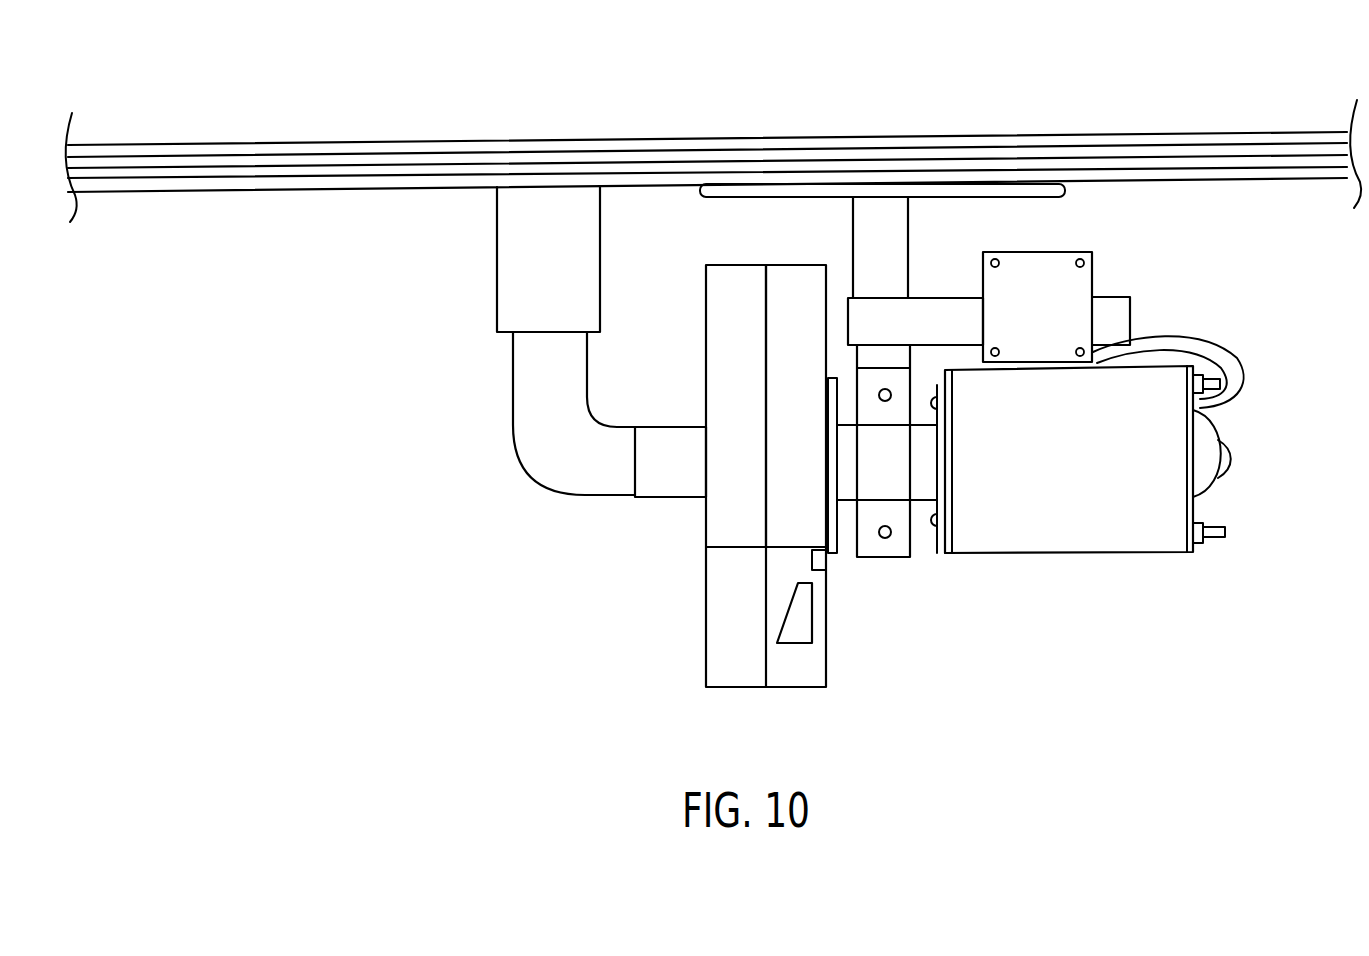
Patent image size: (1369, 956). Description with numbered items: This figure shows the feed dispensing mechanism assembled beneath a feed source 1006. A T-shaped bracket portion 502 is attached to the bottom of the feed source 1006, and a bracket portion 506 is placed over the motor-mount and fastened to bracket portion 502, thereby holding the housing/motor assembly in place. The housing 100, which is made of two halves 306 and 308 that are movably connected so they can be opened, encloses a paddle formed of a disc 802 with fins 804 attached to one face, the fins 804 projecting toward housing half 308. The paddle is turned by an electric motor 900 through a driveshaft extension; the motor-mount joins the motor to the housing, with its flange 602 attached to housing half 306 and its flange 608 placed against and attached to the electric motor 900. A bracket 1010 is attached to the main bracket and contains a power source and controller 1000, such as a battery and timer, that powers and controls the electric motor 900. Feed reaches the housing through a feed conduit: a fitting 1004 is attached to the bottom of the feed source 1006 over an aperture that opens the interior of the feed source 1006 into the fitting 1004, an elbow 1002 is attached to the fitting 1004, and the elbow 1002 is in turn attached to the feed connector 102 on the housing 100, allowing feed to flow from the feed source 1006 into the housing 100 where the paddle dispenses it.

The housing 100 is at (727, 455).
The feed connector 102 is at (683, 476).
The housing half 306 is at (814, 318).
The housing half 308 is at (752, 318).
The bracket portion 502 is at (890, 230).
The bracket portion 506 is at (898, 508).
The flange 602 is at (843, 547).
The flange 608 is at (940, 556).
The disc 802 is at (830, 572).
The fins 804 is at (797, 643).
The electric motor 900 is at (1072, 480).
The power source and controller 1000 is at (1060, 326).
The elbow 1002 is at (573, 447).
The fitting 1004 is at (562, 270).
The feed source 1006 is at (333, 217).
The bracket 1010 is at (945, 310).